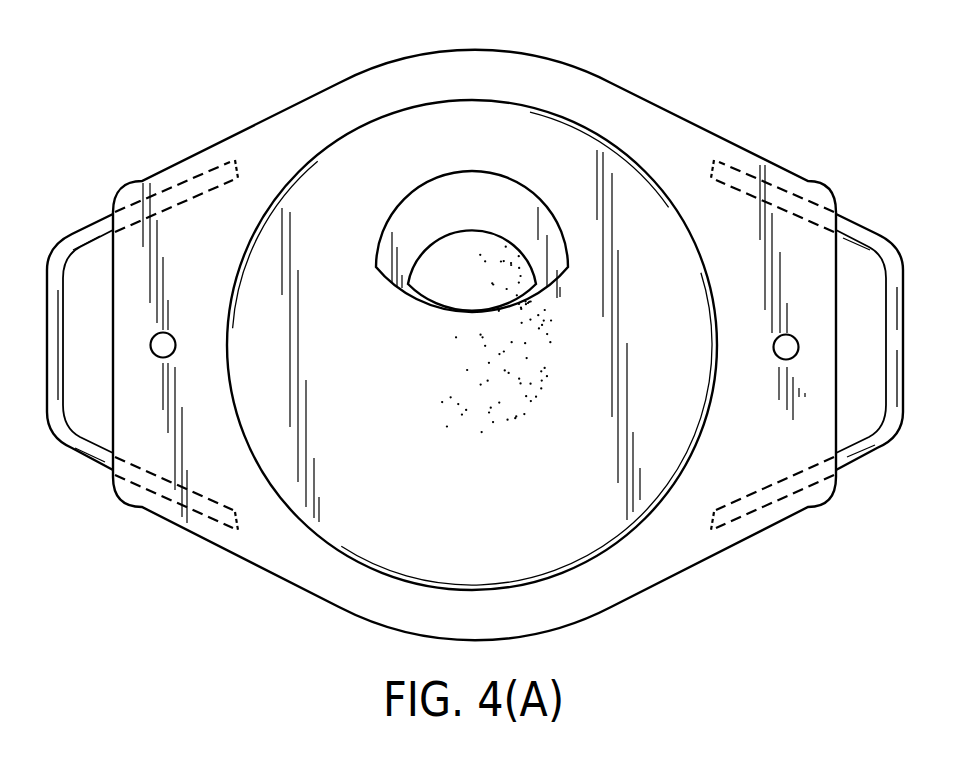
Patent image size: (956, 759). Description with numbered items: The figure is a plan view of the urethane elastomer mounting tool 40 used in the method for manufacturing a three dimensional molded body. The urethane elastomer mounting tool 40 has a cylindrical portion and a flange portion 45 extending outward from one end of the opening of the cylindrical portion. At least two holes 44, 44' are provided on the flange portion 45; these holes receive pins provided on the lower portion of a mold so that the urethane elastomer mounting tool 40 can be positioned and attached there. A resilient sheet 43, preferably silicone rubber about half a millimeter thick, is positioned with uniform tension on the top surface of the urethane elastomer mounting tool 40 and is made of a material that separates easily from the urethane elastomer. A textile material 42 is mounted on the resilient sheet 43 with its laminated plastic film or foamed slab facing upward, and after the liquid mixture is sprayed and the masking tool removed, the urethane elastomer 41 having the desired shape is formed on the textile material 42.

The urethane elastomer mounting tool 40 is at (783, 93).
The urethane elastomer 41 is at (510, 237).
The textile material 42 is at (487, 190).
The resilient sheet 43 is at (633, 230).
The hole 44 is at (829, 276).
The hole 44' is at (110, 266).
The flange portion 45 is at (640, 563).